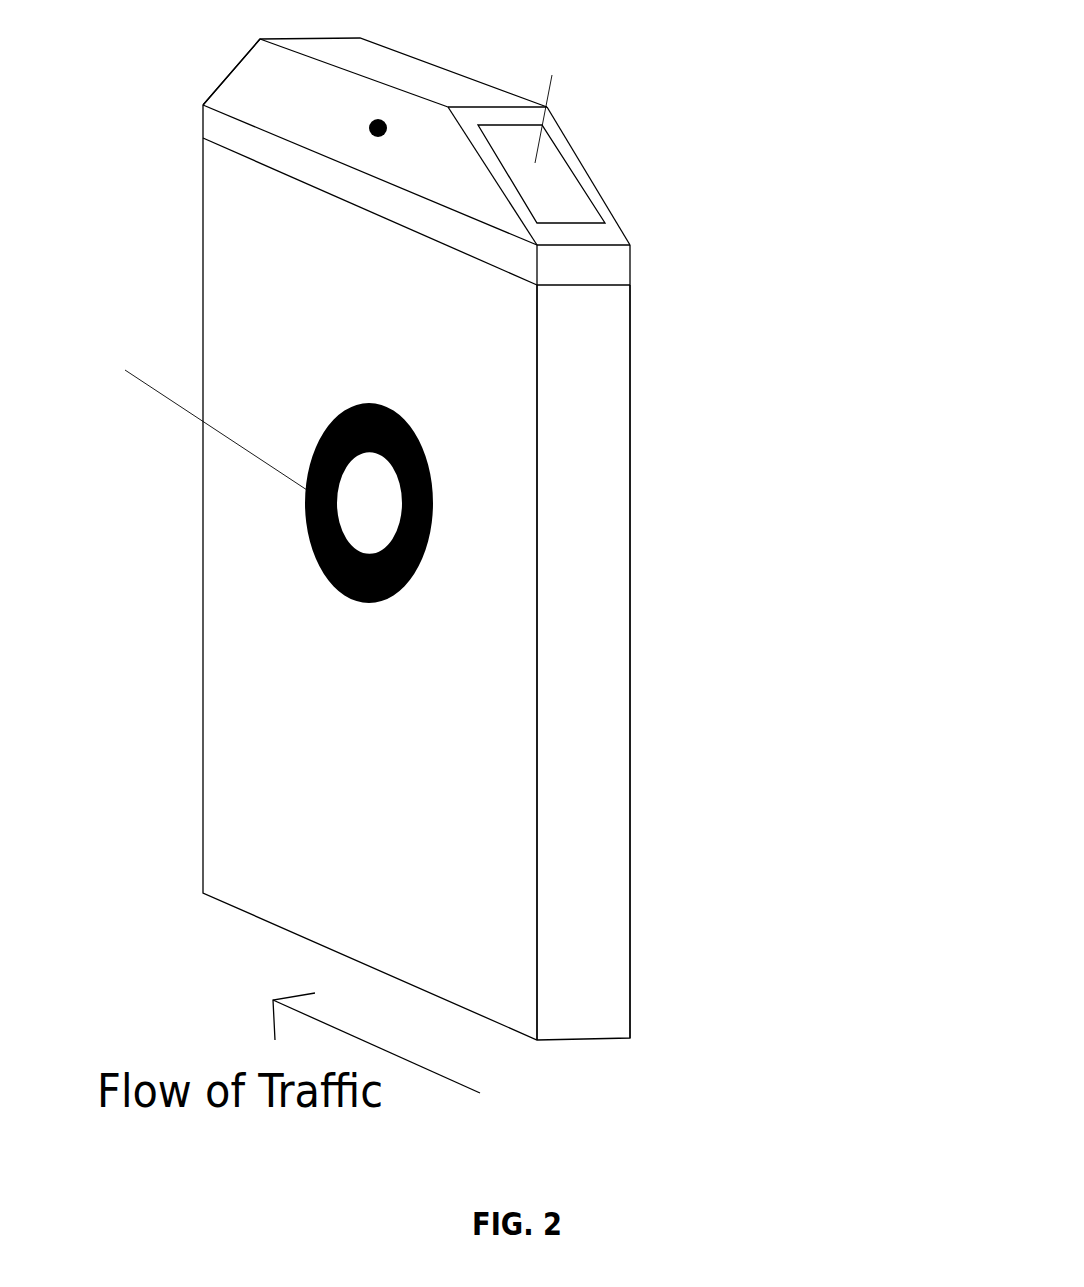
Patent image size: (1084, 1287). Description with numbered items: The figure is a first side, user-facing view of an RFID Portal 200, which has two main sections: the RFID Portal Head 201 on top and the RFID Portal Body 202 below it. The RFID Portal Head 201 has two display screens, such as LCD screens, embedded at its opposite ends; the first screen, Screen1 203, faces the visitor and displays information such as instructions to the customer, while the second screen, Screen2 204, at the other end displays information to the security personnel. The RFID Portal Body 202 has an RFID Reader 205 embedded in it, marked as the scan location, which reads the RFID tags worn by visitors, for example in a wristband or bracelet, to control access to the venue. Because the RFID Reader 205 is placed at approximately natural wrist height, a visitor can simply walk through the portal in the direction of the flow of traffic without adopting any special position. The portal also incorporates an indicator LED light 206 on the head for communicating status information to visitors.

The RFID Portal 200 is at (580, 521).
The RFID Portal Head 201 is at (416, 141).
The RFID Portal Body 202 is at (615, 662).
The Screen1 203 is at (660, 121).
The Screen2 204 is at (226, 56).
The RFID Reader 205 is at (266, 460).
The LED light 206 is at (408, 121).